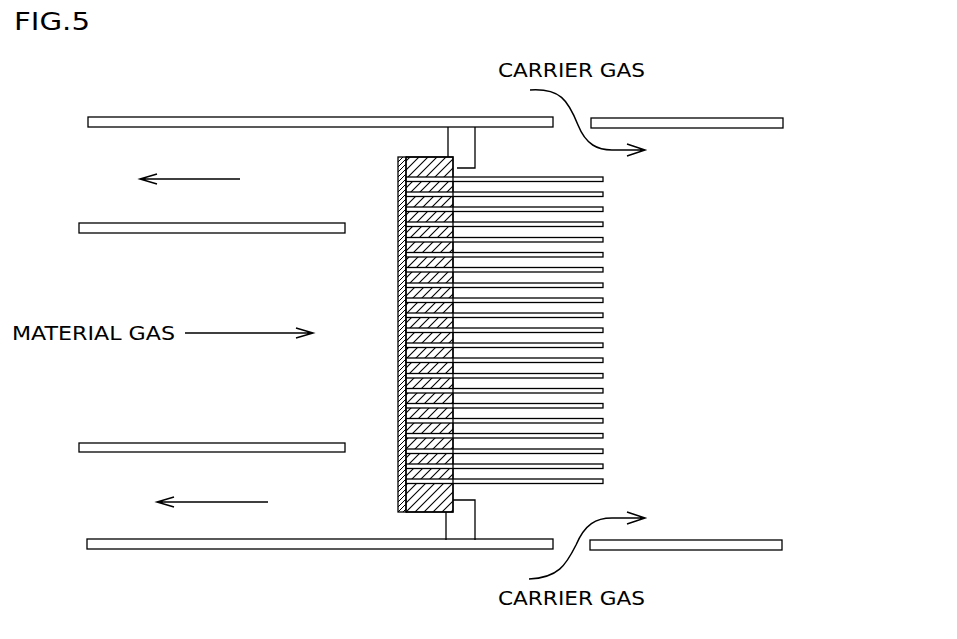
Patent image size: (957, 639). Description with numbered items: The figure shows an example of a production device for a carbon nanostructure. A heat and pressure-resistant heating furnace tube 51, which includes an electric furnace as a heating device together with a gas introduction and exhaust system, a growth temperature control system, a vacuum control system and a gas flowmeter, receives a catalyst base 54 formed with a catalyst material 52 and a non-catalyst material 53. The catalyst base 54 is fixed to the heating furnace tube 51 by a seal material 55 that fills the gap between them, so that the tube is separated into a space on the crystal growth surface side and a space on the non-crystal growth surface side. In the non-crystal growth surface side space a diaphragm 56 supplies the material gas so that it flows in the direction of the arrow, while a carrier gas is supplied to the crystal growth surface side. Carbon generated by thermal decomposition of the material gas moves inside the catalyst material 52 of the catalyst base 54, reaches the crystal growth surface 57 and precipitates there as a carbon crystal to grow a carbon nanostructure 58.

The heat and pressure-resistant heating furnace tube 51 is at (134, 122).
The catalyst material 52 is at (397, 505).
The non-catalyst material 53 is at (504, 312).
The catalyst base 54 is at (485, 328).
The seal material 55 is at (462, 138).
The diaphragm 56 is at (79, 228).
The crystal growth surface 57 is at (462, 175).
The carbon nanostructure 58 is at (487, 177).